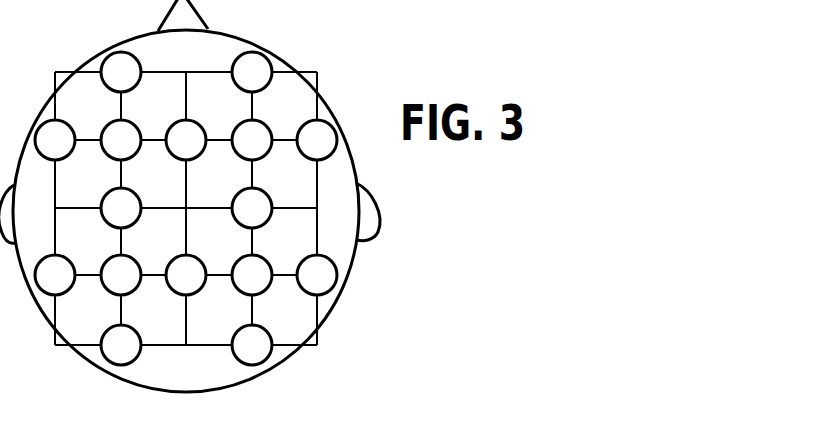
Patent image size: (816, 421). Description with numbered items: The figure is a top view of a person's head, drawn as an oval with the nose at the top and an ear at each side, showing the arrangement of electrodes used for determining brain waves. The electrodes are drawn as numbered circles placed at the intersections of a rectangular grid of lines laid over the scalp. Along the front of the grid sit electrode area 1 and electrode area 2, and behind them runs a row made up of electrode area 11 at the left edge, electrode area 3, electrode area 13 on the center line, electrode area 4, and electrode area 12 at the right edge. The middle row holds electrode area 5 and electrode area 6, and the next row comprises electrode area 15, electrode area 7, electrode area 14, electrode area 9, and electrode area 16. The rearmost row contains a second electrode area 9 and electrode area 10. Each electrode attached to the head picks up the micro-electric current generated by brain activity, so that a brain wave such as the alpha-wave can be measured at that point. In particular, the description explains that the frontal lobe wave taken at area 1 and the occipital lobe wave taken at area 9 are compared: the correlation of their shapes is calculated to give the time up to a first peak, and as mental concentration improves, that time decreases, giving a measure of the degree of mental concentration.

The electrode area (frontal lobe) 1 is at (121, 72).
The electrode area 2 is at (252, 72).
The electrode area 3 is at (121, 140).
The electrode area 4 is at (252, 140).
The electrode area 5 is at (121, 208).
The electrode area 6 is at (252, 208).
The electrode area 7 is at (121, 275).
The electrode area (occipital lobe) 9 is at (186, 310).
The electrode area 10 is at (252, 345).
The electrode area 11 is at (55, 140).
The electrode area 12 is at (317, 140).
The electrode area 13 is at (186, 140).
The electrode area 14 is at (186, 275).
The electrode area 15 is at (55, 275).
The electrode area 16 is at (317, 275).